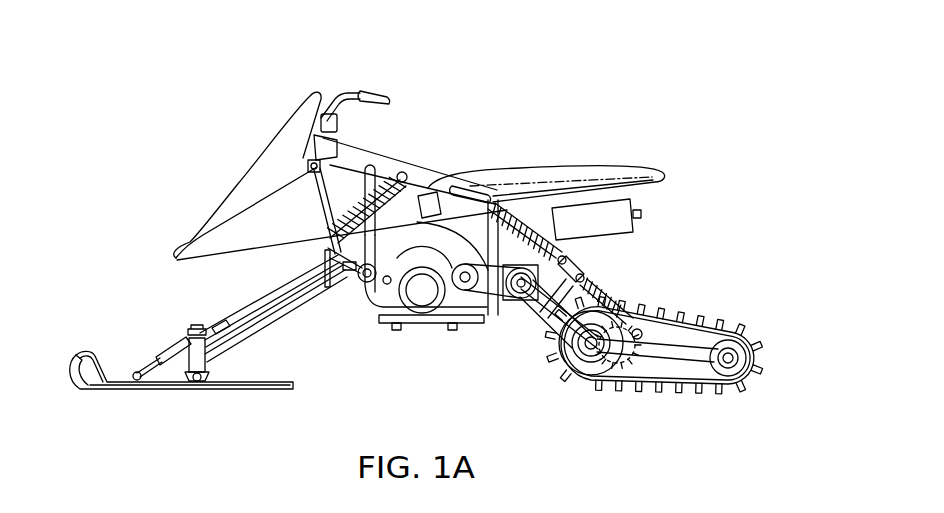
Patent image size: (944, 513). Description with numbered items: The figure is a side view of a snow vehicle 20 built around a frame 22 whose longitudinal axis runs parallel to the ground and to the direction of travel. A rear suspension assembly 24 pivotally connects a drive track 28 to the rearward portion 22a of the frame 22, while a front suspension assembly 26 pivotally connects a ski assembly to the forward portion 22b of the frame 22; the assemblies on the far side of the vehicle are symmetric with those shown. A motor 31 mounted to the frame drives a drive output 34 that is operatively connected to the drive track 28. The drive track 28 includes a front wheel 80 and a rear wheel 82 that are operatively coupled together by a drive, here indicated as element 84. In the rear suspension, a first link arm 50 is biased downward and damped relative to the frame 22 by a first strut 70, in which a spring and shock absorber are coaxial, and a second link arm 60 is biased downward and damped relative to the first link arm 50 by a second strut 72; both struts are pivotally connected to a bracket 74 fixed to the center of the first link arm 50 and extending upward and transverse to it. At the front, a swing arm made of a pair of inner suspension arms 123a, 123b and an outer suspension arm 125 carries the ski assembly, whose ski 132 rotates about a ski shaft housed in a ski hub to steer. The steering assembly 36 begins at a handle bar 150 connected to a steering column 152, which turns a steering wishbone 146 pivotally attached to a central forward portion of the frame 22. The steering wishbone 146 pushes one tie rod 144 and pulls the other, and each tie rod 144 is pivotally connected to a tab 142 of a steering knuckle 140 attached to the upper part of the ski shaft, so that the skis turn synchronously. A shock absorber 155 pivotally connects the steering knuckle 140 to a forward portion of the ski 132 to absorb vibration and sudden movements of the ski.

The snow vehicle 20 is at (637, 56).
The frame 22 is at (377, 307).
The rearward portion 22a is at (687, 201).
The forward portion 22b is at (197, 160).
The rear suspension assembly 24 is at (737, 288).
The front suspension assembly 26 is at (113, 260).
The drive track 28 is at (650, 310).
The motor 31 is at (434, 255).
The drive output 34 is at (521, 282).
The steering assembly 36 is at (312, 234).
The first link arm 50 is at (535, 306).
The second link arm 60 is at (690, 355).
The first strut 70 is at (551, 245).
The second strut 72 is at (600, 287).
The bracket 74 is at (583, 262).
The front wheel 80 is at (580, 370).
The rear wheel 82 is at (730, 373).
The idler wheel 84 is at (743, 330).
The inner suspension arm 123a is at (273, 327).
The inner suspension arm 123b is at (252, 303).
The outer suspension arm 125 is at (238, 338).
The ski 132 is at (140, 384).
The steering knuckle 140 is at (183, 337).
The tab 142 is at (206, 327).
The tie rod 144 is at (212, 323).
The steering wishbone 146 is at (330, 275).
The handle bar 150 is at (345, 93).
The steering column 152 is at (320, 198).
The shock absorber 155 is at (163, 348).